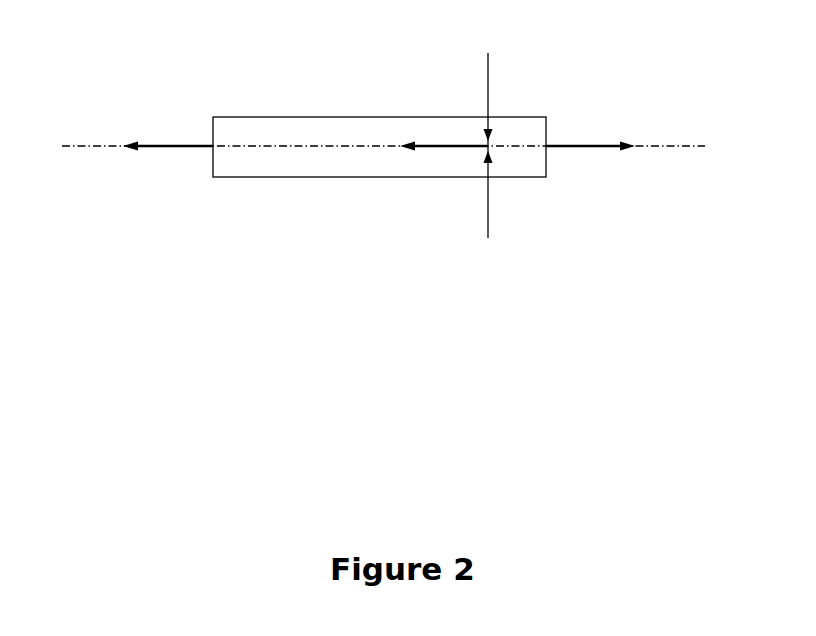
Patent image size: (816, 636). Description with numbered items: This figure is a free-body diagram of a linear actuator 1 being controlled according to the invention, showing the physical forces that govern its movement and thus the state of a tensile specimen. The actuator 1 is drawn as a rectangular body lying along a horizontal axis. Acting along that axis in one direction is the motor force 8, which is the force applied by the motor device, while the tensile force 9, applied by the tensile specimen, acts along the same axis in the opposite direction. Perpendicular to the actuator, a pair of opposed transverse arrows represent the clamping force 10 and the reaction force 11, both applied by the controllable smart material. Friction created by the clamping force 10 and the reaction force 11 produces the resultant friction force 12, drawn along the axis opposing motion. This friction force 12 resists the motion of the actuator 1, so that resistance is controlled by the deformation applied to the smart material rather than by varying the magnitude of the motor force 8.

The linear actuator 1 is at (258, 127).
The motor force 8 is at (193, 143).
The tensile force 9 is at (593, 143).
The clamping force 10 is at (487, 98).
The reaction force 11 is at (490, 197).
The resultant friction force 12 is at (453, 143).